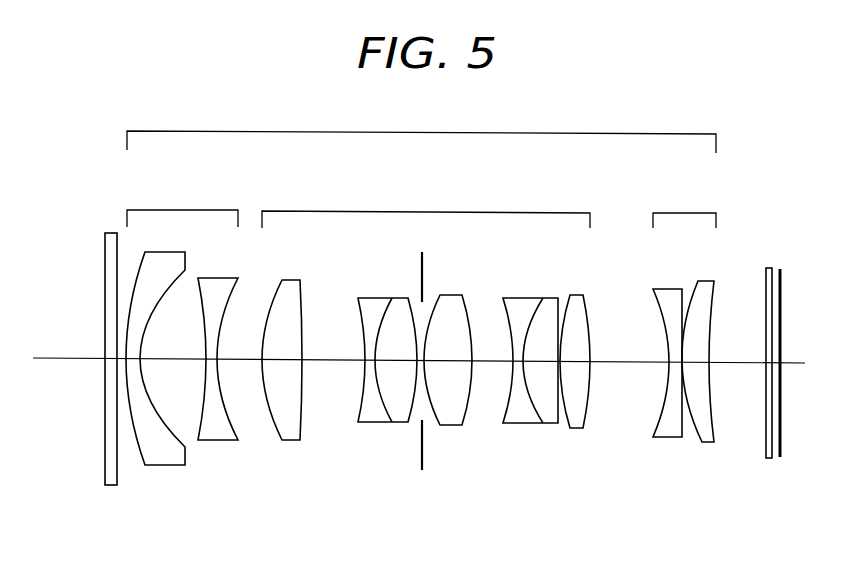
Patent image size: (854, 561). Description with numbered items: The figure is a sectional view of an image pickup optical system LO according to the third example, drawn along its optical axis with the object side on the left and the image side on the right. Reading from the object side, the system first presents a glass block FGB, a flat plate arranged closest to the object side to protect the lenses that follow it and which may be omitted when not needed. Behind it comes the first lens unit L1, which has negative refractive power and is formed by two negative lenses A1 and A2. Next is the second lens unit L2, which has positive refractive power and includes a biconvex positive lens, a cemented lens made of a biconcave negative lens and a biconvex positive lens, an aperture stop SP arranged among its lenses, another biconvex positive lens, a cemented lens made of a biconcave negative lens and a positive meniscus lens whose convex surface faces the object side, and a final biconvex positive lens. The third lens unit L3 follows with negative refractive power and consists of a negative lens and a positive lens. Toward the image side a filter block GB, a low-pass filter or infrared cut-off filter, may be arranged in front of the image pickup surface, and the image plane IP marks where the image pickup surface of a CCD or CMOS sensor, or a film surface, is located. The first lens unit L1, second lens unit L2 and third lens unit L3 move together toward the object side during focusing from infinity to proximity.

The image pickup optical system LO is at (421, 129).
The first lens unit L1 is at (199, 358).
The second lens unit L2 is at (426, 327).
The third lens unit L3 is at (684, 314).
The negative lens A1 is at (165, 465).
The negative lens A2 is at (222, 445).
The aperture stop SP is at (422, 272).
The glass block FGB is at (103, 456).
The low-pass filter or infrared cut-off filter GB is at (766, 448).
The image plane IP is at (781, 285).